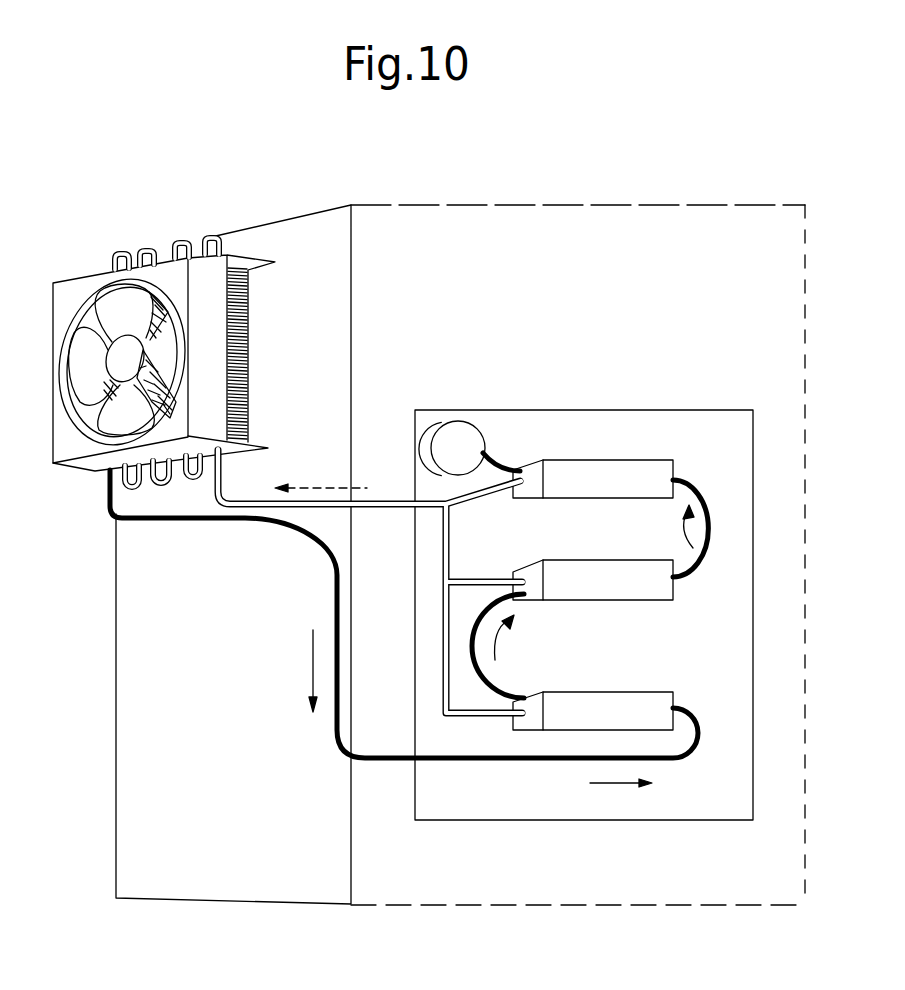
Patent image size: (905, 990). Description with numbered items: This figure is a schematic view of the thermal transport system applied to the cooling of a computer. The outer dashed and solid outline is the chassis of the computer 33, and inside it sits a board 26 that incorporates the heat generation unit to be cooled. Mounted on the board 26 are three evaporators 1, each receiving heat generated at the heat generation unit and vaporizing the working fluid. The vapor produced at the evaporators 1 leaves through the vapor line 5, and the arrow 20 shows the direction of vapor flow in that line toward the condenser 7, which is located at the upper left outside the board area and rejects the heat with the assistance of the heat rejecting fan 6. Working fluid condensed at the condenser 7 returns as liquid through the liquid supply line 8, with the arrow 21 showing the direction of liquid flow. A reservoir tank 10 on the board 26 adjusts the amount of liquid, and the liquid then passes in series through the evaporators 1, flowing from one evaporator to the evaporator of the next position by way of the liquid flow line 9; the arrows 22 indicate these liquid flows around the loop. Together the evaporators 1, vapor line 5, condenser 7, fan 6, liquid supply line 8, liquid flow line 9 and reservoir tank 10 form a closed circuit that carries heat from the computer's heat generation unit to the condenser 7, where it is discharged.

The evaporator 1 is at (608, 461).
The vapor line 5 is at (450, 548).
The heat rejecting fan 6 is at (70, 283).
The condenser 7 is at (153, 253).
The liquid supply line 8 is at (240, 522).
The liquid flow line 9 is at (492, 682).
The reservoir tank 10 is at (457, 427).
The arrow showing direction of vapor flow 20 is at (320, 486).
The arrow showing direction of liquid flow 21 is at (311, 662).
The arrow indicating liquid flow 22 is at (692, 532).
The board 26 is at (700, 411).
The chassis of the computer 33 is at (413, 222).